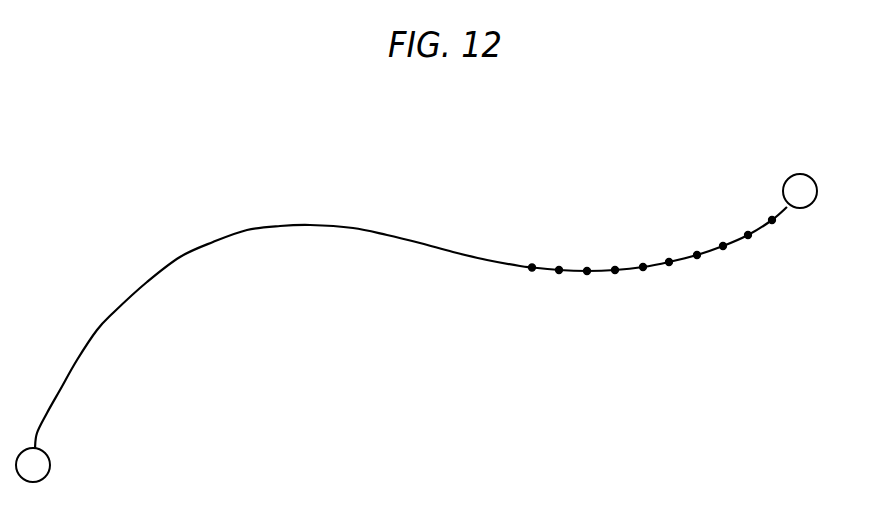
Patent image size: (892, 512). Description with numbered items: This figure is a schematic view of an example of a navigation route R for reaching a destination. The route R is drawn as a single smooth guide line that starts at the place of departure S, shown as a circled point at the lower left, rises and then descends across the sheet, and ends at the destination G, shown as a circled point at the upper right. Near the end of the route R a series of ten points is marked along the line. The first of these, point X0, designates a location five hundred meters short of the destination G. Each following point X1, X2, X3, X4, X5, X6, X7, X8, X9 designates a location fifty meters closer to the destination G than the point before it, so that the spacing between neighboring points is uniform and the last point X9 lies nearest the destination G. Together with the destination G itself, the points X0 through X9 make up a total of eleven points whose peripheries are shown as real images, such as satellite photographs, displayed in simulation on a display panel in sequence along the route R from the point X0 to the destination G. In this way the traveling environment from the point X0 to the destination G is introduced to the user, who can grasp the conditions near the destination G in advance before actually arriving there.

The navigation route R is at (350, 192).
The place of departure S is at (51, 465).
The destination G is at (797, 172).
The point 500 m short of the destination X0 is at (532, 272).
The point 50 m closer to the destination than the preceding point X1 is at (559, 274).
The point 50 m closer to the destination than the preceding point X2 is at (587, 275).
The point 50 m closer to the destination than the preceding point X3 is at (615, 274).
The point 50 m closer to the destination than the preceding point X4 is at (643, 271).
The point 50 m closer to the destination than the preceding point X5 is at (669, 266).
The point 50 m closer to the destination than the preceding point X6 is at (697, 259).
The point 50 m closer to the destination than the preceding point X7 is at (723, 250).
The point 50 m closer to the destination than the preceding point X8 is at (748, 239).
The point 50 m closer to the destination than the preceding point X9 is at (772, 224).